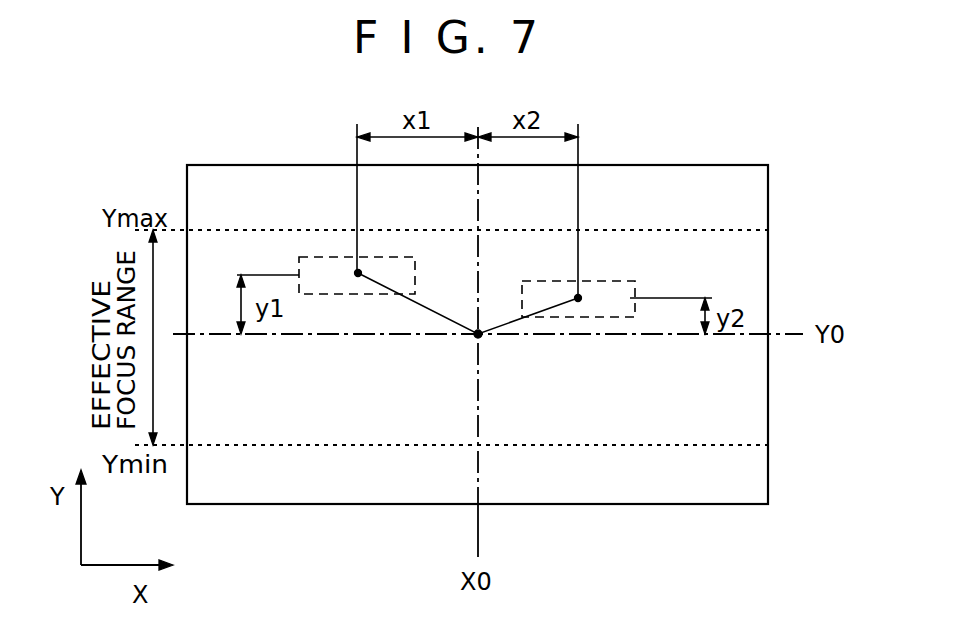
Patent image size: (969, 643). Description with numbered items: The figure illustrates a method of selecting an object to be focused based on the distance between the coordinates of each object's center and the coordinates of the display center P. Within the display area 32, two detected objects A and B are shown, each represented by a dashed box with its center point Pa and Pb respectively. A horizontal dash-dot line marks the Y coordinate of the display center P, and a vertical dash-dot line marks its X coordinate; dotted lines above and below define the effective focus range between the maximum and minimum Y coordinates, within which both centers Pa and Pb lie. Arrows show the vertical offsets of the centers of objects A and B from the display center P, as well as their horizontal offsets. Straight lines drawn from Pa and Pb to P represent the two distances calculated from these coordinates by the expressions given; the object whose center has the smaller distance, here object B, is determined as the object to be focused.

The image capture area / display screen 32 is at (768, 215).
The object A is at (415, 268).
The object B is at (635, 290).
The display center P is at (476, 336).
The center of object A Pa is at (359, 272).
The center of object B Pb is at (579, 297).